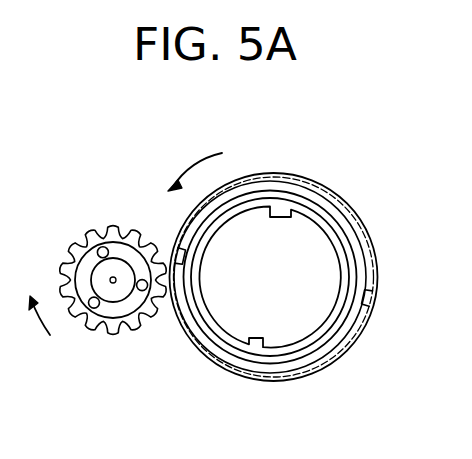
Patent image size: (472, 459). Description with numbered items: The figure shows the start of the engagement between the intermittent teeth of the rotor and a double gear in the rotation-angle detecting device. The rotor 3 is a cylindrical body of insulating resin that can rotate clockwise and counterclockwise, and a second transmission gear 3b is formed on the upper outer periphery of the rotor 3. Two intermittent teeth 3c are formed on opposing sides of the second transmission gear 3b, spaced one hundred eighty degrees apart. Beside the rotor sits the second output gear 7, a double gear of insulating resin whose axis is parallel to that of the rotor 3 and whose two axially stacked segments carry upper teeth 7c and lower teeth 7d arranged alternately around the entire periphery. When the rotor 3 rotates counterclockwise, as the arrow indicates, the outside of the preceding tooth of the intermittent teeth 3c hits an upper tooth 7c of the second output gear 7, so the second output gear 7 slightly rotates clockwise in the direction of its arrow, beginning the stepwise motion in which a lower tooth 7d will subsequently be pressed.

The rotor 3 is at (235, 239).
The second transmission gear 3b is at (188, 328).
The intermittent teeth 3c is at (172, 264).
The second output gear 7 is at (103, 250).
The upper teeth 7c is at (149, 242).
The lower teeth 7d is at (135, 240).